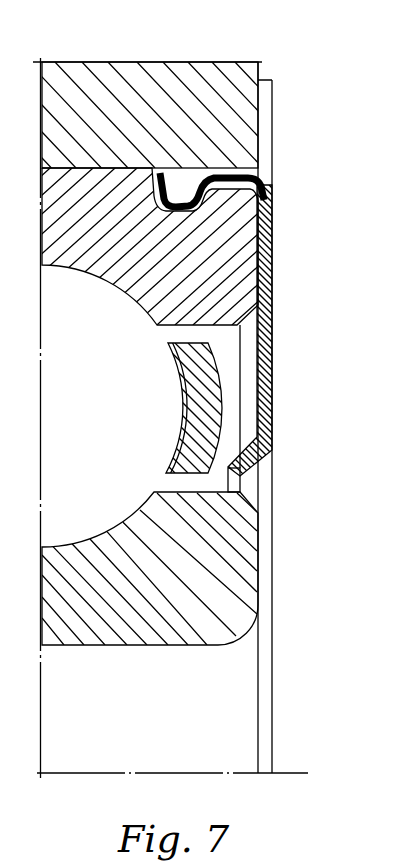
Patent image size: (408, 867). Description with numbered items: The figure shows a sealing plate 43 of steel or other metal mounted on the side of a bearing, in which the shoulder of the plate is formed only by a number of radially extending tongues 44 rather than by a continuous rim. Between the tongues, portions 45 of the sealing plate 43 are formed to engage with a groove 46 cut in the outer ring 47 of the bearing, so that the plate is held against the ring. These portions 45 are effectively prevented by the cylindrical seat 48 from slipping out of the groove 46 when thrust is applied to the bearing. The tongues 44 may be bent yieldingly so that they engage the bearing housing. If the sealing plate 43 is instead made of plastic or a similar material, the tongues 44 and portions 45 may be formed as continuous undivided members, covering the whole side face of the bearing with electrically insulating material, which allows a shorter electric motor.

The sealing plate 43 is at (268, 398).
The tongues 44 is at (268, 143).
The portions between the tongues 45 is at (197, 208).
The groove 46 is at (186, 208).
The outer ring 47 is at (213, 294).
The cylindrical seat 48 is at (187, 176).